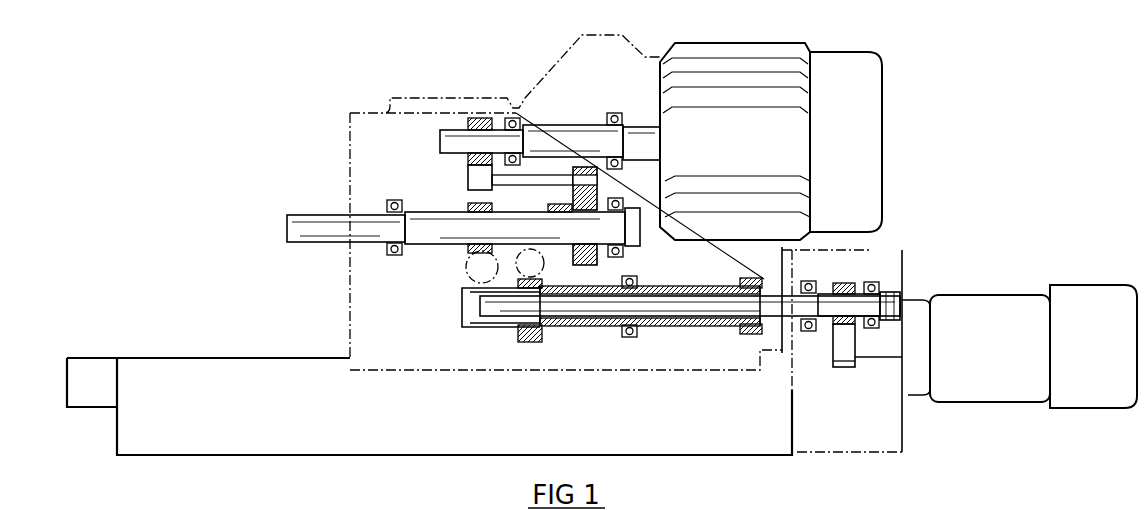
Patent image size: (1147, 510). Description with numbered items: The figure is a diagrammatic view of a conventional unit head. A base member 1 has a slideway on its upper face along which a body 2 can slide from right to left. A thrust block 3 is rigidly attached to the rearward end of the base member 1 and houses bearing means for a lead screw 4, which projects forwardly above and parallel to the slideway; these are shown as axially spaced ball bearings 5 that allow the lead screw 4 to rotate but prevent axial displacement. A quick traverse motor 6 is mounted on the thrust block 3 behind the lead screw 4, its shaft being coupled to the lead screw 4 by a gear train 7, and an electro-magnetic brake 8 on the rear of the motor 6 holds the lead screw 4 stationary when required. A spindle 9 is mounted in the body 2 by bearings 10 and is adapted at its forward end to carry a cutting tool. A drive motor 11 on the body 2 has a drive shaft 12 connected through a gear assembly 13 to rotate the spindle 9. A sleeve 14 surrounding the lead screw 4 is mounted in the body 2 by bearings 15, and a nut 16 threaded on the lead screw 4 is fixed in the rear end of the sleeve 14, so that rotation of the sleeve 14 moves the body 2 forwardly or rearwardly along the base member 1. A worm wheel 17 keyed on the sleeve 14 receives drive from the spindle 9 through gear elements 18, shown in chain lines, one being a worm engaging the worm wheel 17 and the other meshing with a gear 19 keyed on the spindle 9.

The base member 1 is at (320, 457).
The body 2 is at (360, 114).
The thrust block 3 is at (886, 437).
The lead screw 4 is at (773, 317).
The ball bearings 5 is at (880, 294).
The quick traverse motor 6 is at (1000, 300).
The gear train 7 is at (844, 373).
The electro-magnetic brake 8 is at (1103, 300).
The spindle 9 is at (314, 226).
The spindle bearings 10 is at (388, 251).
The drive motor 11 is at (746, 54).
The drive shaft 12 is at (556, 132).
The gear assembly 13 is at (464, 180).
The sleeve 14 is at (688, 328).
The sleeve bearings 15 is at (630, 338).
The nut 16 is at (755, 336).
The worm wheel 17 is at (535, 344).
The gear elements 18 is at (458, 284).
The gear 19 is at (467, 251).